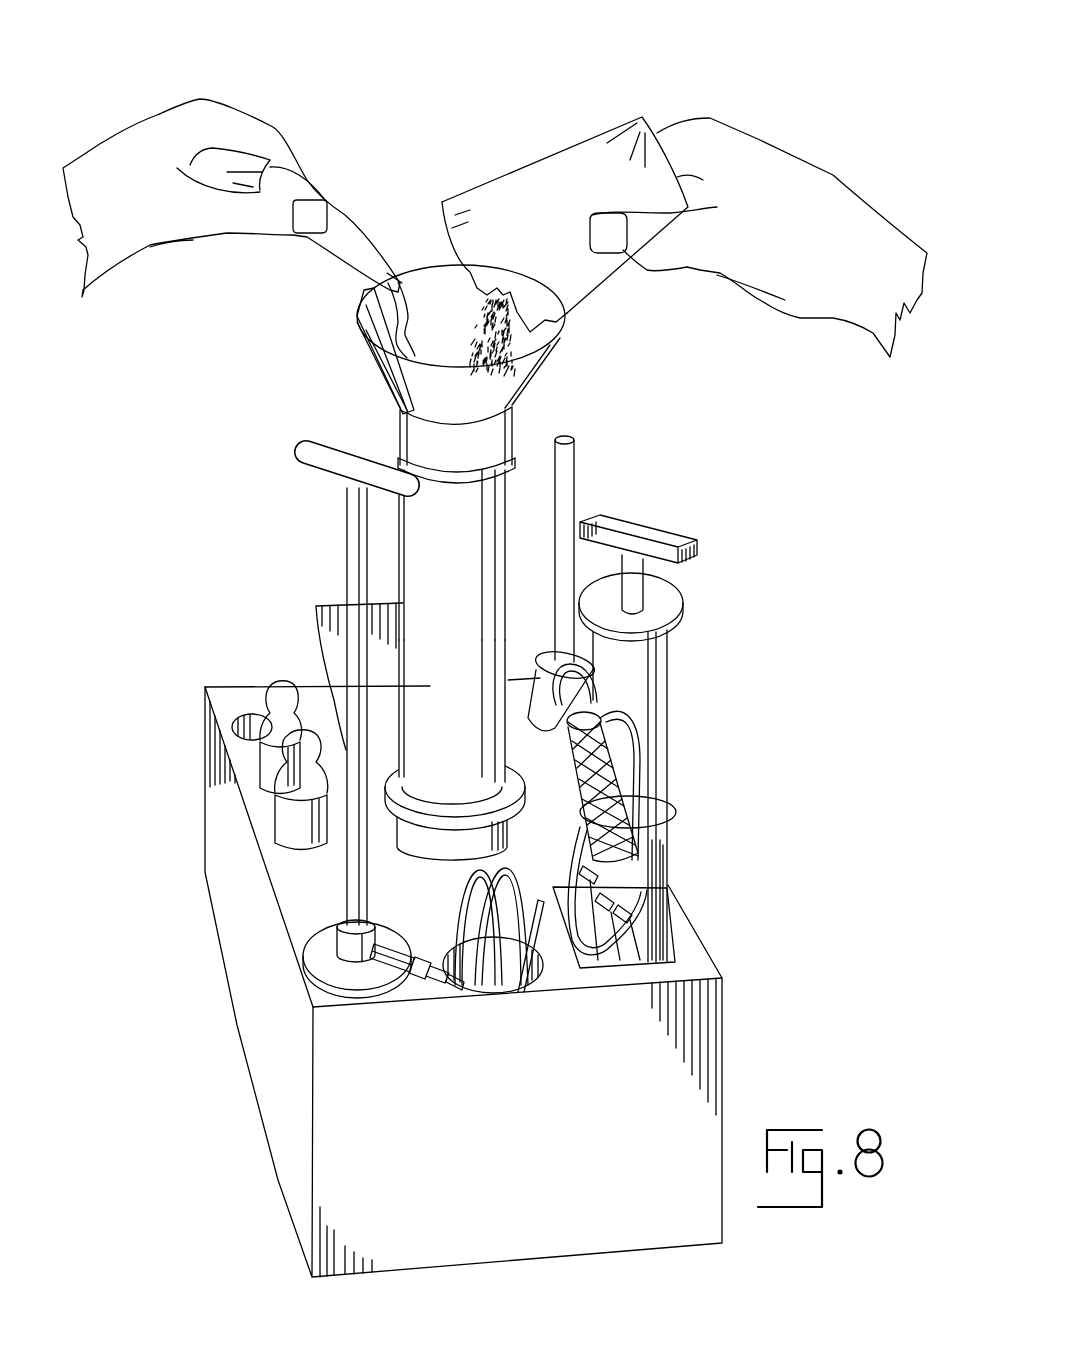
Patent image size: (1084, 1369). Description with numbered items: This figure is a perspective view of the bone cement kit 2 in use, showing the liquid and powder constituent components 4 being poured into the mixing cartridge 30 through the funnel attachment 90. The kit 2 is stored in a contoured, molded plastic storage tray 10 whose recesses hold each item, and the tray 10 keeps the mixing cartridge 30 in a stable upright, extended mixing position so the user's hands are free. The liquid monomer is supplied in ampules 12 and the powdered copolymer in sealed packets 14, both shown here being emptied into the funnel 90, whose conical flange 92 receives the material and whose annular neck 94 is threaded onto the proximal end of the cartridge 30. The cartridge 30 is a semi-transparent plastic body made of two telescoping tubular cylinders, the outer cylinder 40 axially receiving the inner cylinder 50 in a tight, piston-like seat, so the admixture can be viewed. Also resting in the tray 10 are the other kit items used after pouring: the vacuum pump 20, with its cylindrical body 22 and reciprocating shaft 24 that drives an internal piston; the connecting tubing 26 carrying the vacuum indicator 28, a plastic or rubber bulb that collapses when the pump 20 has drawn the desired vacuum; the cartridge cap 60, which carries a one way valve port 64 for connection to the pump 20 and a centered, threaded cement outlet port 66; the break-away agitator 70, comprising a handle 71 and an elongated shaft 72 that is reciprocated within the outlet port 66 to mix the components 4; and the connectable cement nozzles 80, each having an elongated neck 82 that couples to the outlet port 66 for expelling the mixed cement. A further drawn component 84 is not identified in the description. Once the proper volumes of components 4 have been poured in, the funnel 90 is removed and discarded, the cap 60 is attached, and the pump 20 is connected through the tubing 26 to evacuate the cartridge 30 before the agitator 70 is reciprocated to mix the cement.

The kit 2 is at (673, 90).
The constituent components 4 is at (420, 298).
The storage tray 10 is at (262, 1048).
The ampules 12 is at (343, 227).
The packets 14 is at (550, 180).
The vacuum pump 20 is at (689, 738).
The cylindrical body 22 is at (653, 662).
The reciprocating shaft 24 is at (633, 588).
The connecting tubing 26 is at (543, 873).
The vacuum indicator 28 is at (607, 807).
The mixing cartridge 30 is at (465, 598).
The outer cylinder 40 is at (427, 708).
The inner cylinder 50 is at (505, 800).
The cartridge cap 60 is at (358, 996).
The one way valve port 64 is at (406, 975).
The cement outlet port 66 is at (370, 930).
The break-away agitator 70 is at (271, 709).
The handle 71 is at (312, 458).
The elongated shaft 72 is at (357, 545).
The cement nozzles 80 is at (548, 553).
The elongated neck 82 is at (560, 487).
The cup 84 is at (535, 717).
The funnel attachment 90 is at (446, 374).
The conical flange 92 is at (430, 372).
The annular neck 94 is at (417, 437).